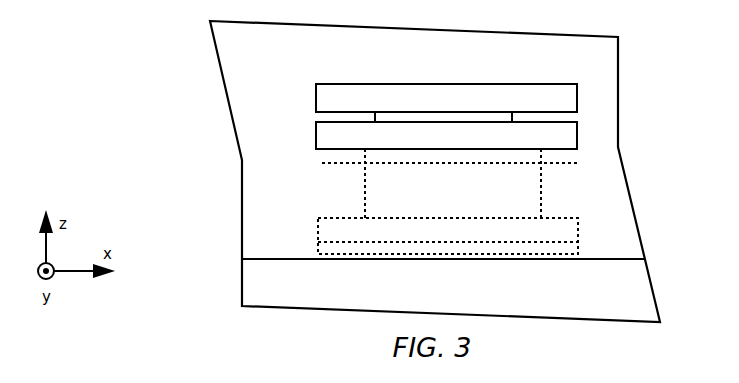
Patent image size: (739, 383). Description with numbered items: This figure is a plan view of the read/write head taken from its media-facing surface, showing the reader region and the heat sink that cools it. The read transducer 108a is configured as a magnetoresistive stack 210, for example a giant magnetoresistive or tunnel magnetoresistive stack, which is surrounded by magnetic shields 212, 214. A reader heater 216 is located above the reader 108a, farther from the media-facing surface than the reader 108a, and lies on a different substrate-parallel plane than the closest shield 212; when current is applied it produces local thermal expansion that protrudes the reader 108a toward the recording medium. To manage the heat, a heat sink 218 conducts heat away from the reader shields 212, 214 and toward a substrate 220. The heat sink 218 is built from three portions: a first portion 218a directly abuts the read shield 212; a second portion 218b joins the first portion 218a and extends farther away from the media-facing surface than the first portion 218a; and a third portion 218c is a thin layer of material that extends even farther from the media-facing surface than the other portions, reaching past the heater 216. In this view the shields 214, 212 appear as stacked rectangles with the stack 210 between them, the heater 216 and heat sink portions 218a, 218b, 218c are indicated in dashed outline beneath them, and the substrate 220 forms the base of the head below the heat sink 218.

The read transducer 108a is at (242, 113).
The magnetoresistive stack 210 is at (419, 103).
The magnetic shield 214 is at (316, 96).
The magnetic shield 212 is at (316, 134).
The reader heater 216 is at (577, 166).
The heat sink 218 is at (368, 201).
The first portion 218a is at (365, 195).
The second portion 218b is at (320, 234).
The third portion 218c is at (320, 251).
The substrate 220 is at (244, 281).